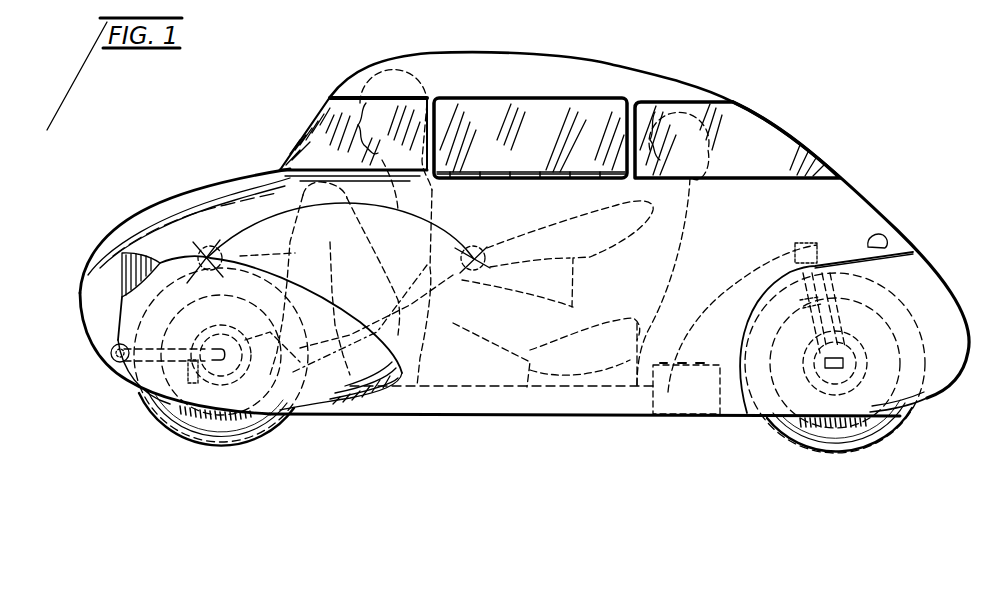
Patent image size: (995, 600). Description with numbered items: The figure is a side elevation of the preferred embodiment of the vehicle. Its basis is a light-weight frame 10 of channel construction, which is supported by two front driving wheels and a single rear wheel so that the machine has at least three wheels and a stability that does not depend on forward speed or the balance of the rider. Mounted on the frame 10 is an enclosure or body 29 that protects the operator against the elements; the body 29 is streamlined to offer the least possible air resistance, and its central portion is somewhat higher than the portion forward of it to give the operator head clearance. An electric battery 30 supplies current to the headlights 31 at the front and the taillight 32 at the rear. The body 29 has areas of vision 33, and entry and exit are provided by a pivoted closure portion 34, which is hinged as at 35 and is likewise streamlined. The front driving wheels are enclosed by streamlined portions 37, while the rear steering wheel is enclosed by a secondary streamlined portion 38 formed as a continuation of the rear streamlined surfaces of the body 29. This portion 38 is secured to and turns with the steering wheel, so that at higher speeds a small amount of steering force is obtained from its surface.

The frame 10 is at (547, 401).
The body 29 is at (866, 208).
The electric battery 30 is at (714, 420).
The headlights 31 is at (135, 271).
The taillight 32 is at (886, 238).
The areas of vision 33 is at (758, 133).
The pivoted closure portion 34 is at (613, 66).
The hinge 35 is at (540, 172).
The streamlined portions 37 is at (128, 320).
The secondary streamlined portion 38 is at (925, 277).